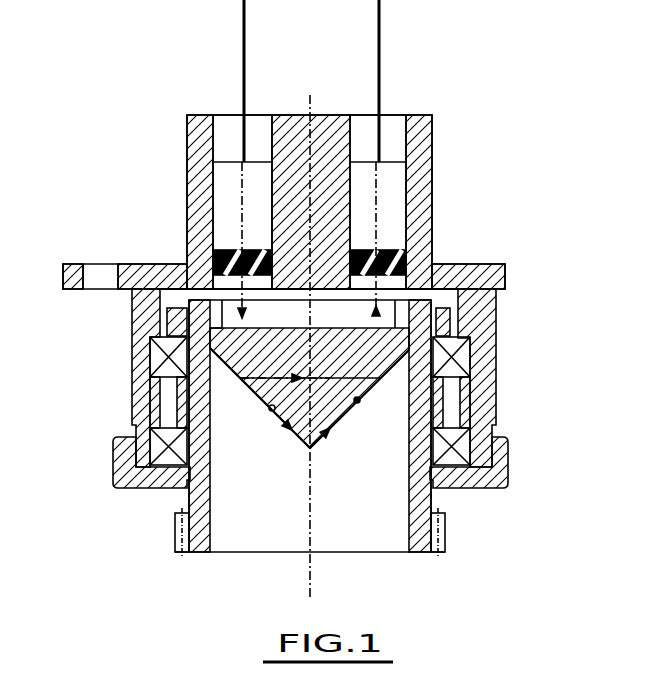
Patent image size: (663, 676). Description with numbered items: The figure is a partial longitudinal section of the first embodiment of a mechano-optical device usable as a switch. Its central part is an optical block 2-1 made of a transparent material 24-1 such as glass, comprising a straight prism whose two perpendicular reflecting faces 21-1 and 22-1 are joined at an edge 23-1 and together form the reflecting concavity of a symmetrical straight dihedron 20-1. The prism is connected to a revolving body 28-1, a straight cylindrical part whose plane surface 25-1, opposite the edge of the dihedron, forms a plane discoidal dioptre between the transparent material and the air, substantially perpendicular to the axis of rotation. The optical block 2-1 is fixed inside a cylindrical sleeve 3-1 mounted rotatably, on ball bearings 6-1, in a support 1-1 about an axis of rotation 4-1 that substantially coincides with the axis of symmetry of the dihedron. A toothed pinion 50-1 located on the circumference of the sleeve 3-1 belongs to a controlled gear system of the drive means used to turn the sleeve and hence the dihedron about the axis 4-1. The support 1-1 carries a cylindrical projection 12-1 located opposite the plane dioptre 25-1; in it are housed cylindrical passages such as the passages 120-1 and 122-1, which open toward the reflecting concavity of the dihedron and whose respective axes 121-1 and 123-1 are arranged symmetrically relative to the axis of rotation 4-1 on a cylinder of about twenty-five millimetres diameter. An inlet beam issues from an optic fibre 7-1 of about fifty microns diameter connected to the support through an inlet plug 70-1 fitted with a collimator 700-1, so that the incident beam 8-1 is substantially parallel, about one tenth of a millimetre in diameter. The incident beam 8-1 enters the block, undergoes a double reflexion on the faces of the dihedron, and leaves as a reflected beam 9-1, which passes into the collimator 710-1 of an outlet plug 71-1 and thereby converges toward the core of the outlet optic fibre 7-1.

The support 1-1 is at (125, 368).
The optical block 2-1 is at (336, 422).
The cylindrical sleeve 3-1 is at (423, 548).
The axis of rotation 4-1 is at (312, 100).
The ball bearings 6-1 is at (490, 432).
The optic fibre 7-1 is at (225, 0).
The incident beam 8-1 is at (227, 357).
The reflected beam 9-1 is at (388, 378).
The cylindrical projection 12-1 is at (422, 140).
The straight dihedron 20-1 is at (288, 428).
The reflecting face 21-1 is at (268, 411).
The reflecting face 22-1 is at (357, 401).
The edge of the dihedron 23-1 is at (316, 452).
The transparent material 24-1 is at (352, 358).
The plane surface 25-1 is at (450, 265).
The revolving body 28-1 is at (205, 338).
The toothed pinion 50-1 is at (452, 524).
The inlet plug 70-1 is at (283, 180).
The outlet plug 71-1 is at (398, 212).
The cylindrical passage 120-1 is at (215, 137).
The passage axis 121-1 is at (235, 198).
The cylindrical passage 122-1 is at (402, 125).
The passage axis 123-1 is at (405, 200).
The inlet collimator 700-1 is at (217, 258).
The outlet collimator 710-1 is at (392, 258).